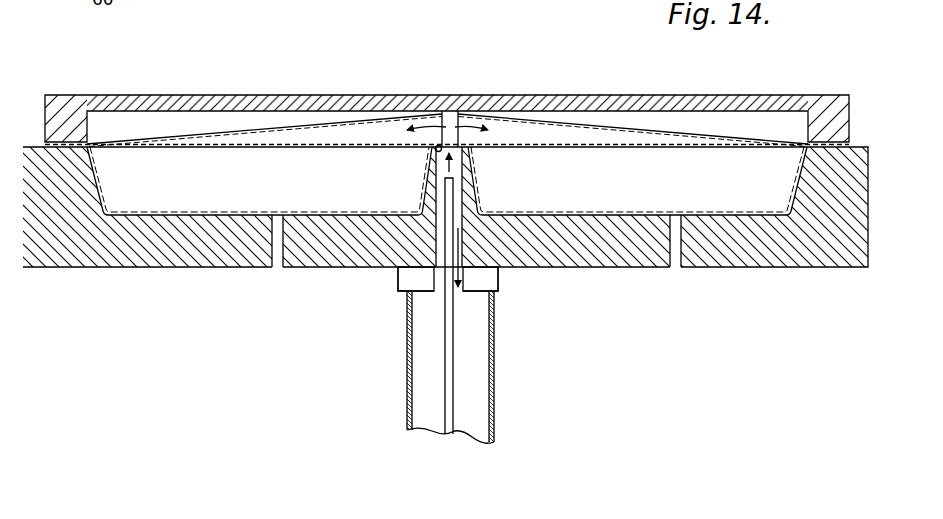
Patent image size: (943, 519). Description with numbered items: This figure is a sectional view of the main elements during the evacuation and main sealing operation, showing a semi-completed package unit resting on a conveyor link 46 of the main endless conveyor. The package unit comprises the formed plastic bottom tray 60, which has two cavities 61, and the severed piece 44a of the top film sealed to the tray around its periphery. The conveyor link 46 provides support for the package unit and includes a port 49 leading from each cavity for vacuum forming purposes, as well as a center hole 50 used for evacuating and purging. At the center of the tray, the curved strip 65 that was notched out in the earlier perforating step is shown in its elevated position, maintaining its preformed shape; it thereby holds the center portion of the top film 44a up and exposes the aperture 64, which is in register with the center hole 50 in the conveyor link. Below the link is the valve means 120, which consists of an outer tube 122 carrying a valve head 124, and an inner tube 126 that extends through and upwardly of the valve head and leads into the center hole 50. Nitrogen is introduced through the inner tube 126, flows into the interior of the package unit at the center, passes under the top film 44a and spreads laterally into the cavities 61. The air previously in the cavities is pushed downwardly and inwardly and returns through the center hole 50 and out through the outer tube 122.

The severed piece of top film 44a is at (588, 130).
The conveyor link 46 is at (80, 262).
The port 49 is at (270, 253).
The center hole 50 is at (468, 187).
The plastic bottom tray 60 is at (799, 207).
The cavity 61 is at (305, 0).
The aperture 64 is at (435, 149).
The curved strip 65 is at (453, 113).
The valve means 120 is at (503, 333).
The outer tube 122 is at (497, 405).
The valve head 124 is at (410, 280).
The inner tube 126 is at (452, 382).